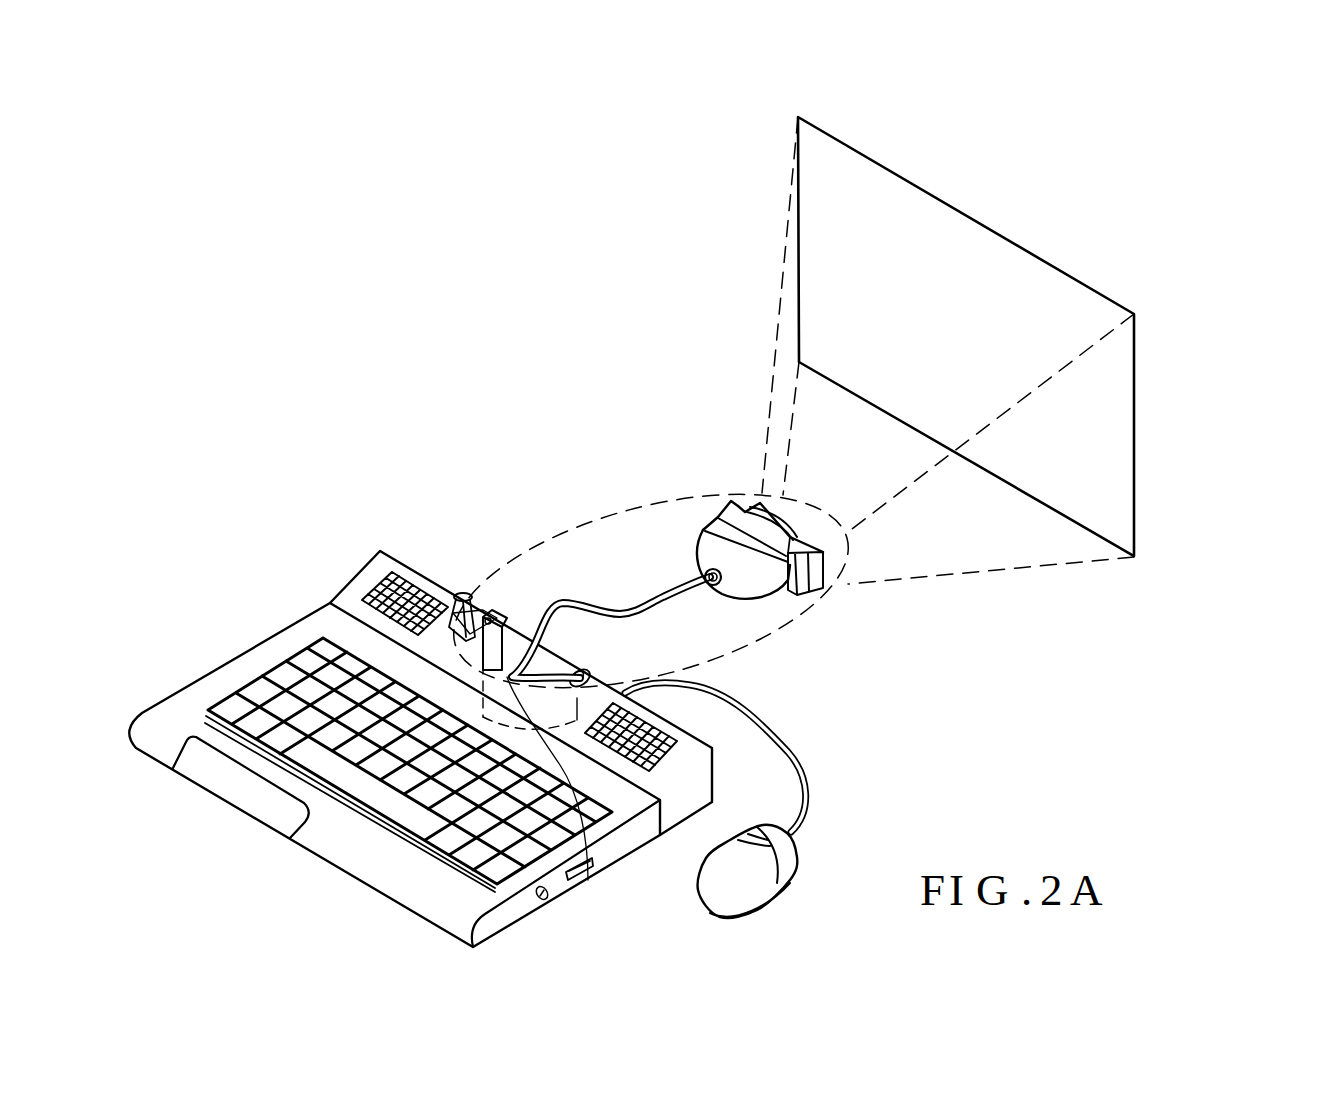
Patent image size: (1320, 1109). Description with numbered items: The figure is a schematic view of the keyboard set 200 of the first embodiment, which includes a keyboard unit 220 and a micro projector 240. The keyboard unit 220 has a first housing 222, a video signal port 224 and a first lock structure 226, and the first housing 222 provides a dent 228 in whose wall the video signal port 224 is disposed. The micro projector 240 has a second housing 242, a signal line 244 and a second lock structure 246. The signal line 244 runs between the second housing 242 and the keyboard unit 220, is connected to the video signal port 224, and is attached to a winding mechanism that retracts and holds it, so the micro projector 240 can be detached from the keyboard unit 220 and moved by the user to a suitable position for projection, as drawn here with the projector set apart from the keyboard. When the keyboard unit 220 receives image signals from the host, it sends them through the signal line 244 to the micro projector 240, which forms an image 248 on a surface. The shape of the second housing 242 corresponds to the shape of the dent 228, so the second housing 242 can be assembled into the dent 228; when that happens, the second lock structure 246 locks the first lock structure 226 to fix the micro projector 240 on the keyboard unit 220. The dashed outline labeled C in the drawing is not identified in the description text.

The keyboard set 200 is at (492, 368).
The keyboard unit 220 is at (245, 692).
The first housing 222 is at (393, 556).
The video signal port 224 is at (587, 880).
The first lock structure 226 is at (502, 637).
The dent 228 is at (543, 665).
The micro projector 240 is at (742, 592).
The second housing 242 is at (708, 532).
The signal line 244 is at (693, 580).
The second lock structure 246 is at (805, 568).
The image 248 is at (1137, 414).
The projection cone C is at (723, 493).